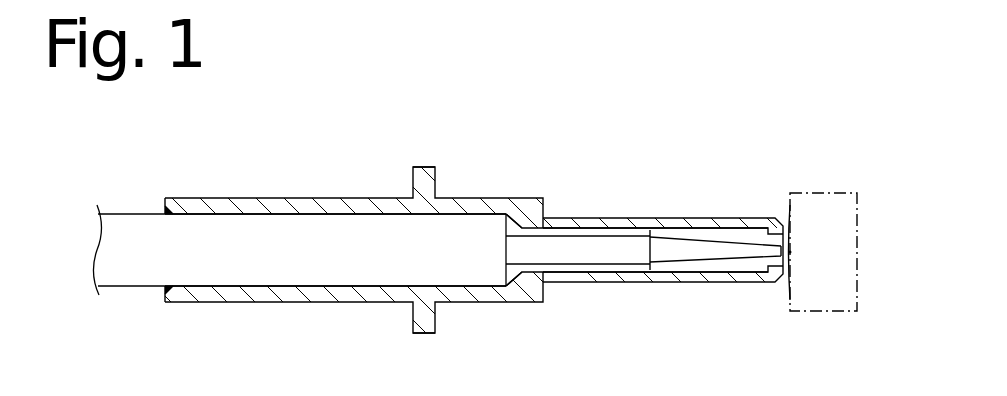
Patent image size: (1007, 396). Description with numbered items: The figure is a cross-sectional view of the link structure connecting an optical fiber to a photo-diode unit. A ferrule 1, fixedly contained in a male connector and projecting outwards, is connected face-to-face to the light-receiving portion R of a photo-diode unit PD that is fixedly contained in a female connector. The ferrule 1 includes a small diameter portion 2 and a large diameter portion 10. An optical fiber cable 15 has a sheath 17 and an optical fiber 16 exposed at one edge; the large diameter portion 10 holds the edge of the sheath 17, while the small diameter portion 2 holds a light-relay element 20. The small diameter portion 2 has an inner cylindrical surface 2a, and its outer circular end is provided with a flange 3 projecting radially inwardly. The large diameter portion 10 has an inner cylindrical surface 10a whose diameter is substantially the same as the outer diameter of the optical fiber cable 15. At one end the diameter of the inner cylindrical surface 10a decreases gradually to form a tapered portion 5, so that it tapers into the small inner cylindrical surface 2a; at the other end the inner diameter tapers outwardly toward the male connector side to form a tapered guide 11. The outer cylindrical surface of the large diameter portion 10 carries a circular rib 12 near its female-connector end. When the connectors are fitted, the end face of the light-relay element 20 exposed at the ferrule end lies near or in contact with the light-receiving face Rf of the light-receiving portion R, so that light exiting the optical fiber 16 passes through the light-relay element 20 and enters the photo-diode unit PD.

The ferrule 1 is at (430, 76).
The small diameter portion 2 is at (622, 284).
The inner cylindrical surface 2a is at (709, 230).
The flange 3 is at (747, 282).
The tapered portion 5 is at (504, 226).
The large diameter portion 10 is at (352, 304).
The inner cylindrical surface 10a is at (291, 215).
The tapered guide 11 is at (170, 210).
The circular rib 12 is at (437, 310).
The optical fiber cable 15 is at (131, 287).
The optical fiber 16 is at (552, 274).
The sheath 17 is at (279, 288).
The light-relay element 20 is at (696, 277).
The light-receiving portion R is at (791, 251).
The light-receiving face Rf is at (790, 256).
The photo-diode unit PD is at (858, 284).